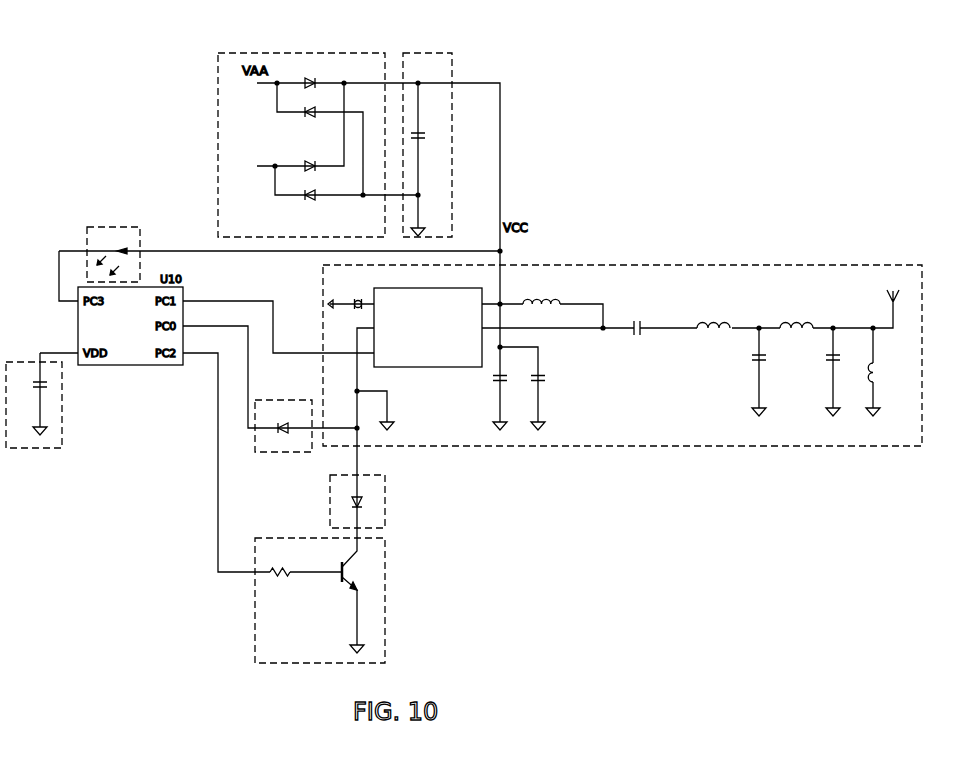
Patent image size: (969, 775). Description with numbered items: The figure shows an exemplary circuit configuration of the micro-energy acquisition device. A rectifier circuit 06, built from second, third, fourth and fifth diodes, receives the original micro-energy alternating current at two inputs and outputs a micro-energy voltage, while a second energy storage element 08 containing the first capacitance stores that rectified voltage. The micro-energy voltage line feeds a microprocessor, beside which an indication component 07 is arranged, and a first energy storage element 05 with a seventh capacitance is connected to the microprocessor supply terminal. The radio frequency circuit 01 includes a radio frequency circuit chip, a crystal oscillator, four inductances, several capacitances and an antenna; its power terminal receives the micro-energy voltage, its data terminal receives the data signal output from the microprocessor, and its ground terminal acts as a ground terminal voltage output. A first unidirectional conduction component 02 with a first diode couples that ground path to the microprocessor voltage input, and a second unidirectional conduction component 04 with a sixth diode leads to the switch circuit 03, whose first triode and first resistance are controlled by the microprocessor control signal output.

The radio frequency circuit 01 is at (585, 265).
The first unidirectional conduction component 02 is at (278, 399).
The switch circuit 03 is at (385, 586).
The second unidirectional conduction component 04 is at (385, 495).
The first energy storage element 05 is at (62, 434).
The rectifier circuit 06 is at (370, 53).
The indication component 07 is at (118, 228).
The second energy storage element 08 is at (425, 53).